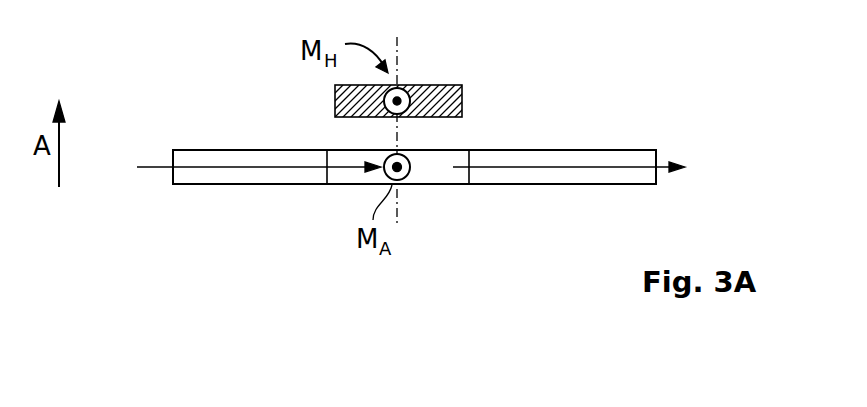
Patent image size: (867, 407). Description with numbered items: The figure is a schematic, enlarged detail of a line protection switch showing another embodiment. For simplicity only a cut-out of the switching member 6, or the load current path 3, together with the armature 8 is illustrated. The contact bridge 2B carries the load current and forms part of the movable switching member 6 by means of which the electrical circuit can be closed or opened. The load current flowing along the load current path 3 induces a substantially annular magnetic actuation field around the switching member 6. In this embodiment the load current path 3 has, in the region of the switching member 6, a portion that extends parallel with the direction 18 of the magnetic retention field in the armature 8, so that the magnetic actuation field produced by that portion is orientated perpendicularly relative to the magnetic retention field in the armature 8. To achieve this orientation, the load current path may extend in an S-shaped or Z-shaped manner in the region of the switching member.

The load current path 3 is at (155, 167).
The switching member 6 is at (570, 201).
The contact bridge 2B is at (570, 157).
The armature 8 is at (452, 96).
The magnetic field lines of the magnetic retention field 18 is at (402, 100).